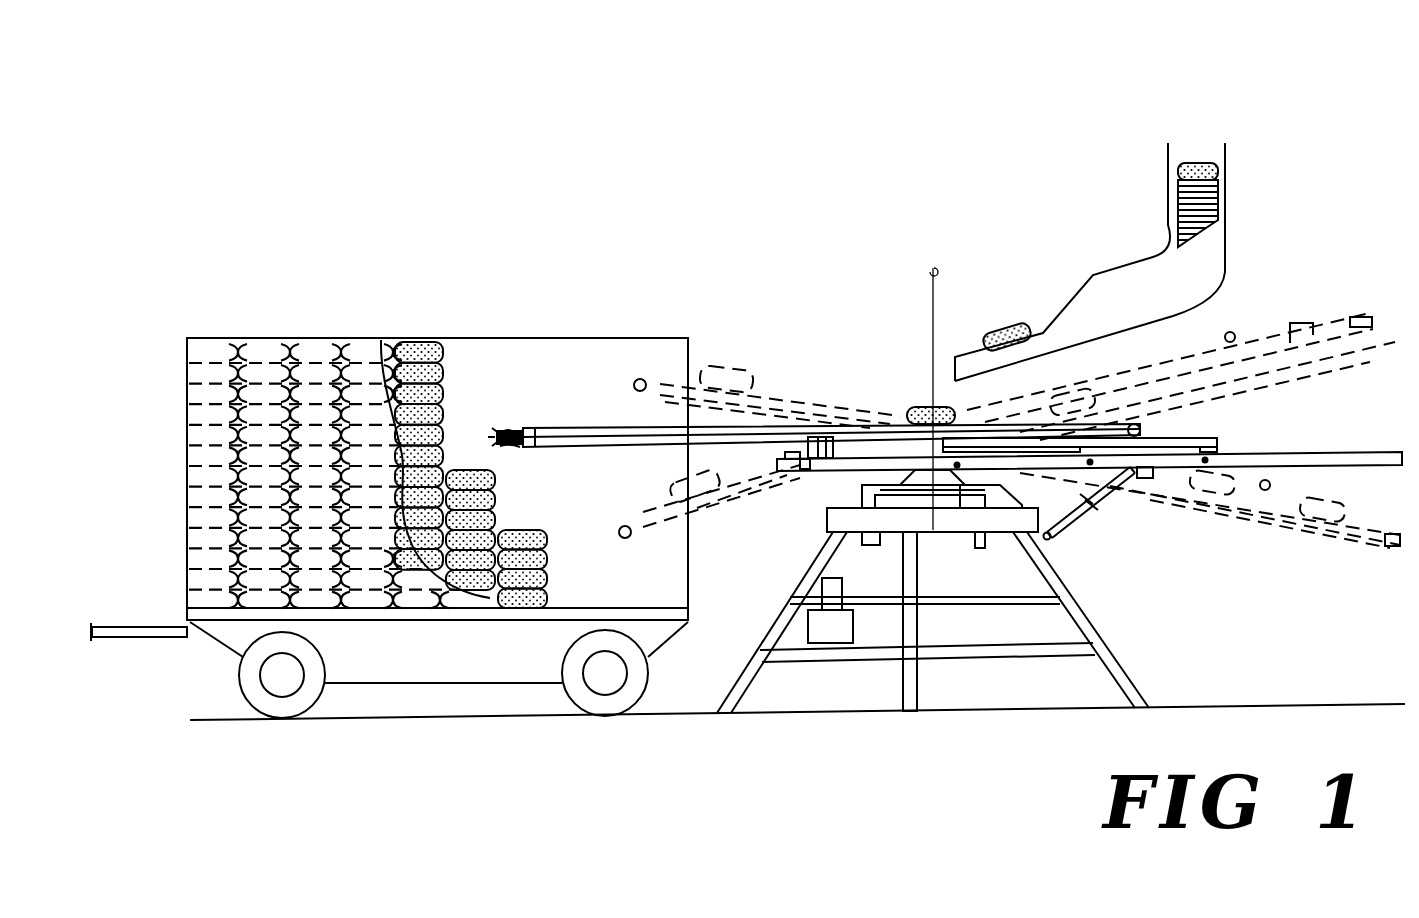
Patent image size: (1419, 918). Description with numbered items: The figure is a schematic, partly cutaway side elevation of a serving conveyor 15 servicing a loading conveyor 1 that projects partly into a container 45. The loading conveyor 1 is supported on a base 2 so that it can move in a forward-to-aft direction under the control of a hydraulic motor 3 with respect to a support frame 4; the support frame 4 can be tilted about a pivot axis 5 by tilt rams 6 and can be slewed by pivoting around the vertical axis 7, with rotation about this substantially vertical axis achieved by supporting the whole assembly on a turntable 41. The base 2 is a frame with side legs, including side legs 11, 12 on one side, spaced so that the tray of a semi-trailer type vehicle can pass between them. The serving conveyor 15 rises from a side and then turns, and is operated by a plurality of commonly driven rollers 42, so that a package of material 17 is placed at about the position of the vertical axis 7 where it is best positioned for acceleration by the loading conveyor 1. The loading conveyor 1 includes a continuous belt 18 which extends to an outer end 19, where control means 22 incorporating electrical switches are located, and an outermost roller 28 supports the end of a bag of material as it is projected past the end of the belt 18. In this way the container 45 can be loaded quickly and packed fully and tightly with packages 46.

The loading conveyor 1 is at (825, 426).
The base 2 is at (1105, 596).
The hydraulic motor 3 is at (814, 471).
The support frame 4 is at (1272, 458).
The pivot axis 5 is at (935, 475).
The tilt rams 6 is at (1080, 510).
The vertical axis 7 is at (931, 364).
The side leg 11 is at (752, 667).
The side leg 12 is at (1120, 657).
The serving conveyor 15 is at (1208, 280).
The package of material 17 is at (1008, 328).
The continuous belt 18 is at (626, 428).
The outer end 19 is at (525, 430).
The control means 22 is at (516, 450).
The outermost roller 28 is at (500, 408).
The turntable 41 is at (978, 508).
The rollers 42 is at (1175, 217).
The container 45 is at (470, 600).
The packages 46 is at (445, 346).